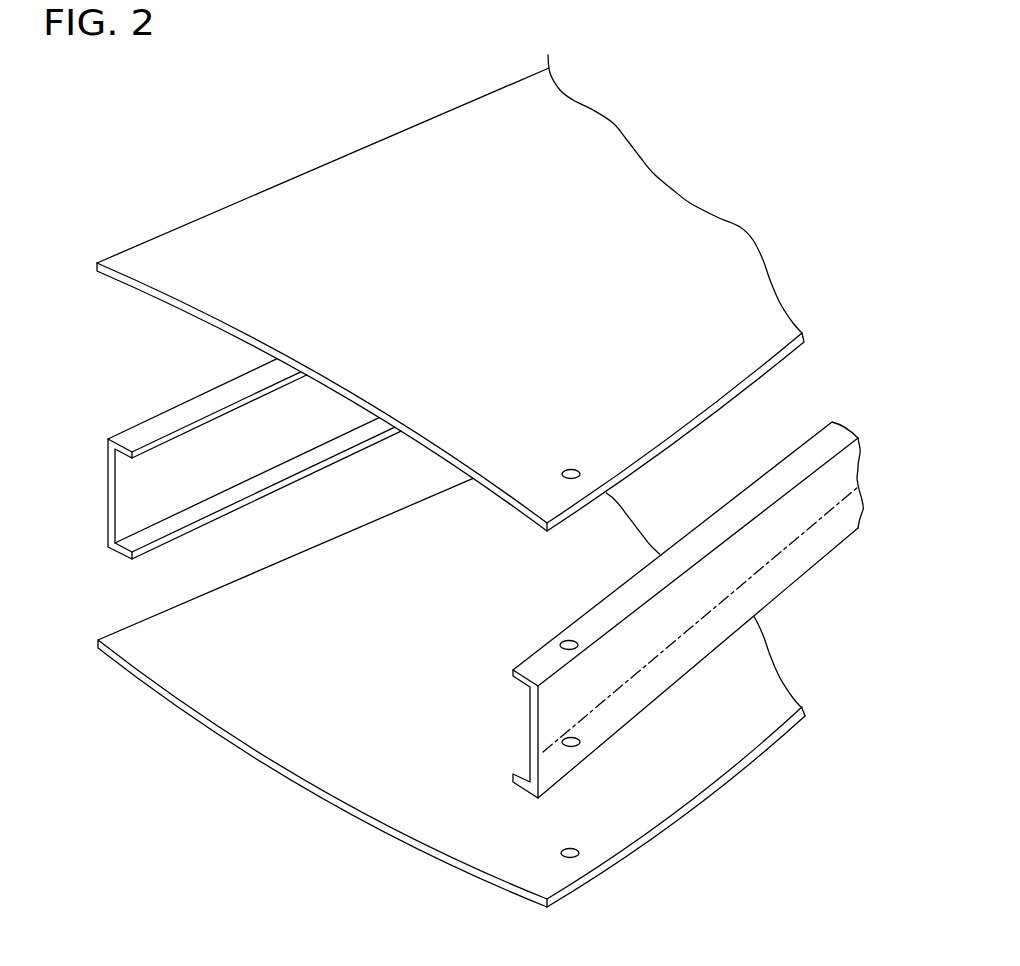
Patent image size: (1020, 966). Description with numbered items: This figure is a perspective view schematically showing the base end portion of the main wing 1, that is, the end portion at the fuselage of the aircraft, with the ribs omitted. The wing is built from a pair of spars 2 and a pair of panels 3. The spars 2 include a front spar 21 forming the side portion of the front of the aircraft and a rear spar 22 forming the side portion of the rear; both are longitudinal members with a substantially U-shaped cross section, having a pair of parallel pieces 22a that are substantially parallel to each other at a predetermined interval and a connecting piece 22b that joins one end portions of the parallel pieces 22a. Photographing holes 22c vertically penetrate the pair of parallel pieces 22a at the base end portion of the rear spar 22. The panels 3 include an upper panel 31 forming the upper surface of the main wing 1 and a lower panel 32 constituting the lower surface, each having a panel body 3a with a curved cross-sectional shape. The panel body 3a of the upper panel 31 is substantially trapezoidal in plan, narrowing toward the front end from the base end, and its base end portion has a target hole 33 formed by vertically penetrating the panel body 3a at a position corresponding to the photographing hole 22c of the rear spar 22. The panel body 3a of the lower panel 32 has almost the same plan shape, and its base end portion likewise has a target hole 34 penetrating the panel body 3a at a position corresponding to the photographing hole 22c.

The main wing 1 is at (211, 147).
The spars 2 is at (461, 581).
The panels 3 is at (451, 504).
The panel body 3a is at (183, 224).
The front spar 21 is at (123, 413).
The rear spar 22 is at (672, 714).
The parallel pieces 22a is at (597, 617).
The connecting piece 22b is at (602, 681).
The photographing holes 22c is at (563, 641).
The upper panel 31 is at (336, 139).
The lower panel 32 is at (298, 820).
The target hole 33 is at (571, 469).
The target hole 34 is at (578, 843).